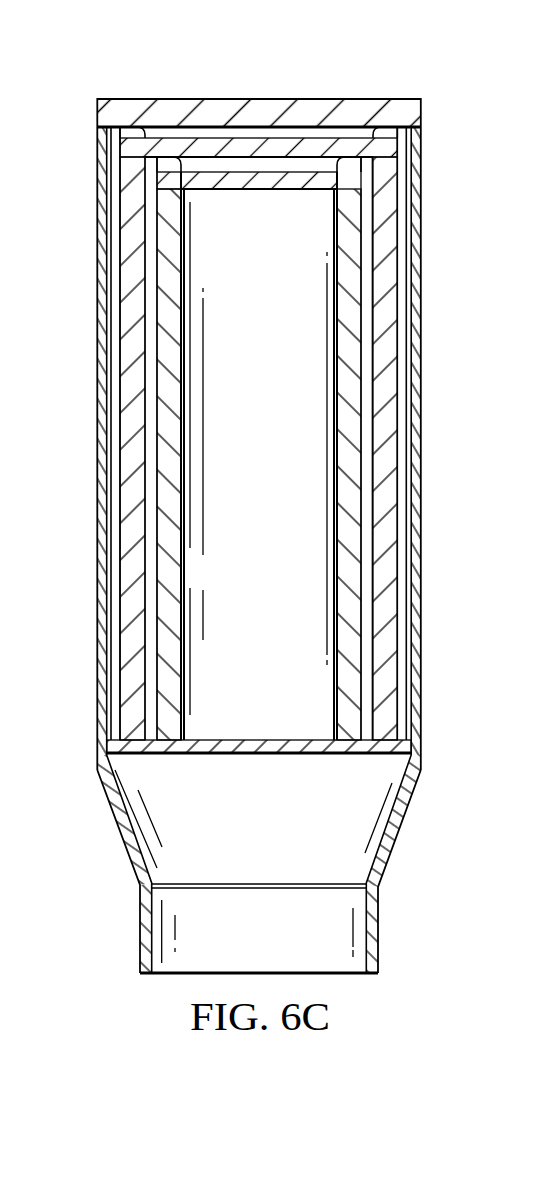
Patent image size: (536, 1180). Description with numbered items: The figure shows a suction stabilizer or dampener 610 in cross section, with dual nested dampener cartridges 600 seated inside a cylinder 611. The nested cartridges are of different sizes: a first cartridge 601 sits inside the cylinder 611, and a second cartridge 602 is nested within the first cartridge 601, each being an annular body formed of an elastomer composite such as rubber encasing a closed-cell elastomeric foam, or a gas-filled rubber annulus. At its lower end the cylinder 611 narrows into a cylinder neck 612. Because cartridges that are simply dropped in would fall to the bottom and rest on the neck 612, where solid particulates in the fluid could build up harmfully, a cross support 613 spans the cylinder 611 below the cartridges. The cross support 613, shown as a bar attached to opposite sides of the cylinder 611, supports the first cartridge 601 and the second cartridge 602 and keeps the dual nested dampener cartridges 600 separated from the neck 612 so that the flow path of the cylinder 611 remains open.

The dual nested dampener cartridges 600 is at (252, 229).
The suction stabilizer or dampener 610 is at (374, 59).
The cylinder 611 is at (108, 218).
The first cartridge 601 is at (127, 293).
The second cartridge 602 is at (172, 562).
The cross support 613 is at (265, 753).
The cylinder neck 612 is at (398, 840).